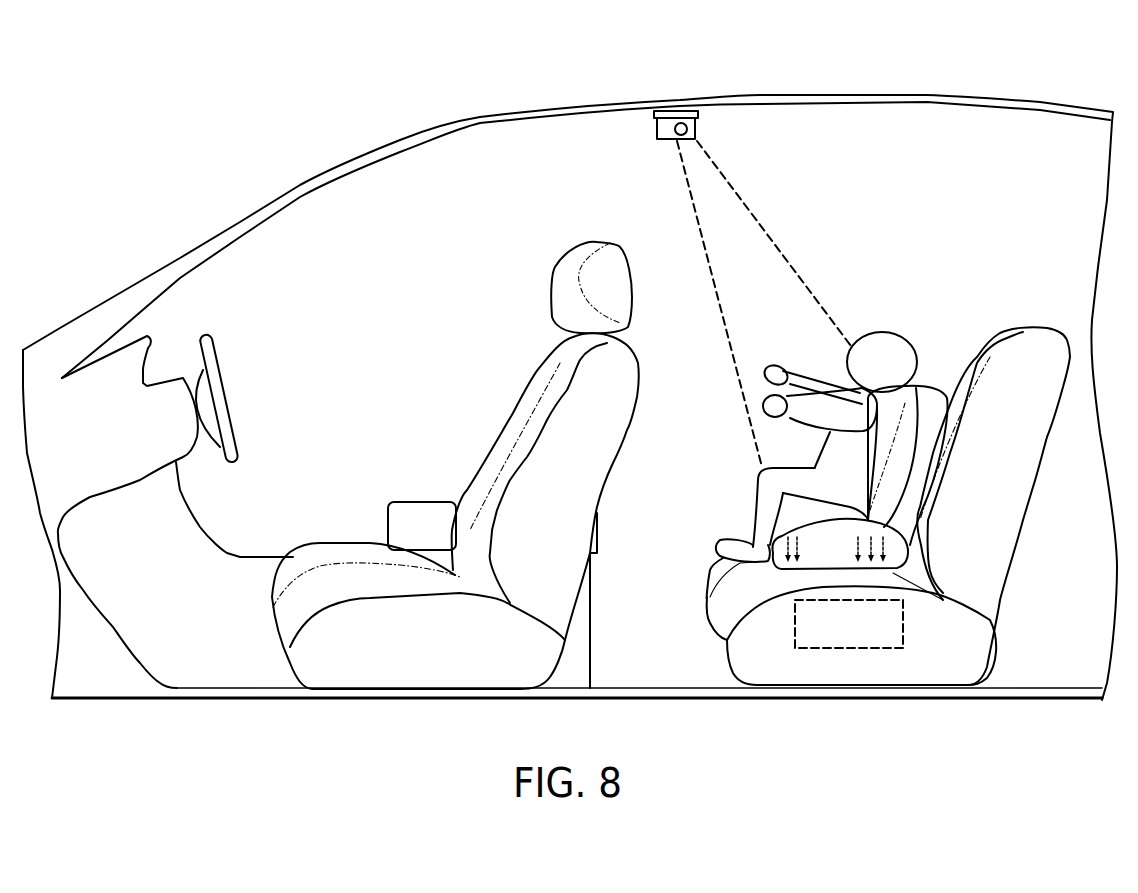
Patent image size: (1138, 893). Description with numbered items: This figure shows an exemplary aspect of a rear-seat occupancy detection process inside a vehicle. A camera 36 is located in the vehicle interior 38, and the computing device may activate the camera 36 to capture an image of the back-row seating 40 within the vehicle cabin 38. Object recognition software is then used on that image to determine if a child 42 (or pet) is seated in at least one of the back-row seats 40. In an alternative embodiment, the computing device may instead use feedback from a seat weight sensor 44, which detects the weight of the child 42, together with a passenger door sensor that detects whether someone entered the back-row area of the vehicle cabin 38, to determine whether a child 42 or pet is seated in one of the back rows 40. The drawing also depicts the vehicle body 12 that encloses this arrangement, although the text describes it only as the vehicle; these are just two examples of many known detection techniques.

The vehicle 12 is at (790, 95).
The camera 36 is at (657, 128).
The vehicle interior 38 is at (962, 116).
The back-row seating 40 is at (1023, 465).
The child 42 is at (912, 316).
The seat weight sensor 44 is at (885, 637).